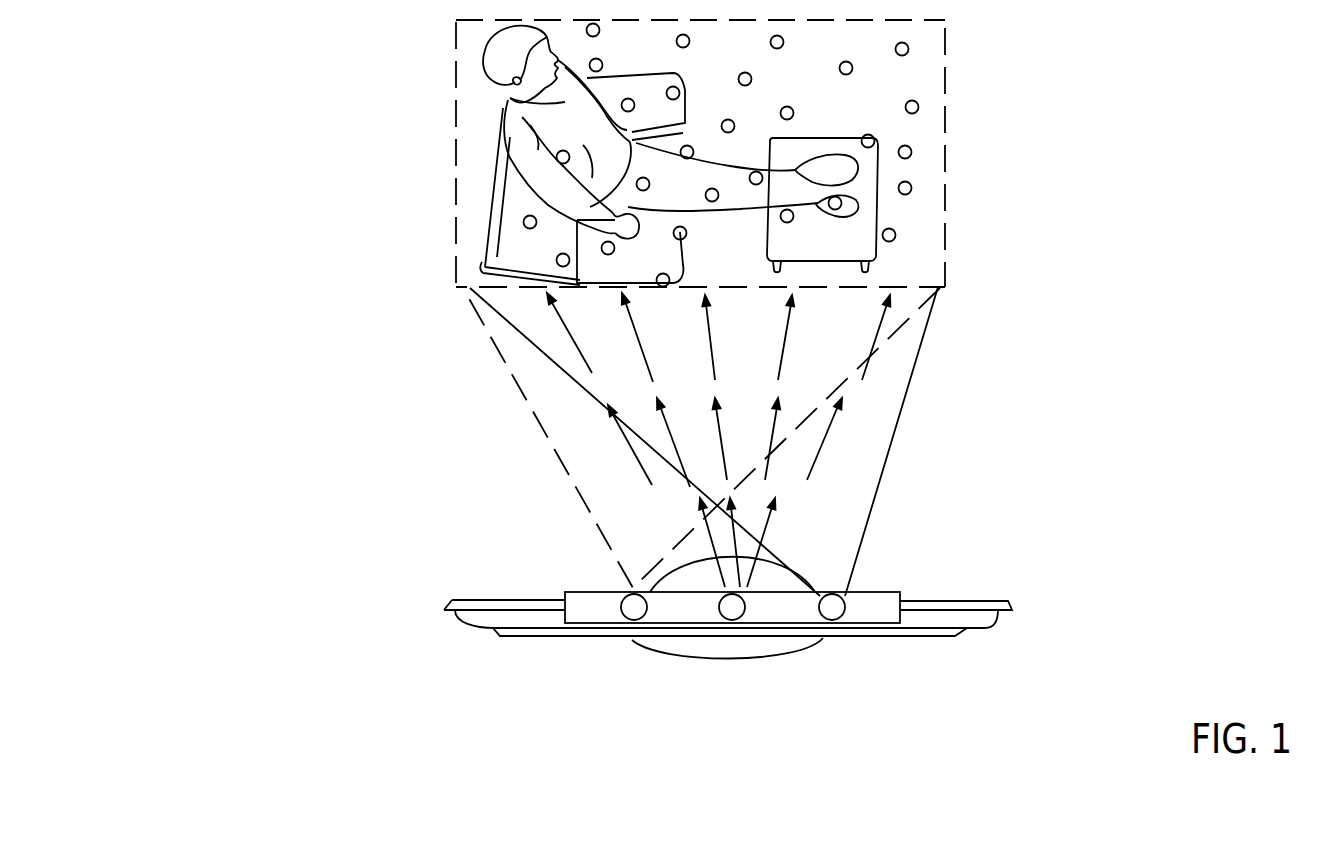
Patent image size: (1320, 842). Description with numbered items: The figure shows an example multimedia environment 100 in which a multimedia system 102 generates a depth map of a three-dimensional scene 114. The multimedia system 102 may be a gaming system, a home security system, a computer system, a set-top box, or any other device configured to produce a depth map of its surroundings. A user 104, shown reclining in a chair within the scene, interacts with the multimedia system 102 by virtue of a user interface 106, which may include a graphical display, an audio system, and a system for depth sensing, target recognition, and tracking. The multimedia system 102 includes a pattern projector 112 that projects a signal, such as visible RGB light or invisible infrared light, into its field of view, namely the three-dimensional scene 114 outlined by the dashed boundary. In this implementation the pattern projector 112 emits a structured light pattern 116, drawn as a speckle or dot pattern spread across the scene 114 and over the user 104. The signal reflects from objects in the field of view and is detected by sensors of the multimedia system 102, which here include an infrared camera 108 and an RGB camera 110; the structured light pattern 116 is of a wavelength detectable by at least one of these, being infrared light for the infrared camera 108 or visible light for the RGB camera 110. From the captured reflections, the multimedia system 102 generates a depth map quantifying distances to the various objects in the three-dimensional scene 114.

The multimedia environment 100 is at (298, 140).
The multimedia system 102 is at (583, 592).
The user 104 is at (512, 137).
The user interface 106 is at (470, 598).
The infrared (IR) camera 108 is at (832, 620).
The RGB camera 110 is at (633, 620).
The pattern projector 112 is at (732, 620).
The three-dimensional scene 114 is at (455, 46).
The structured light pattern 116 is at (908, 53).